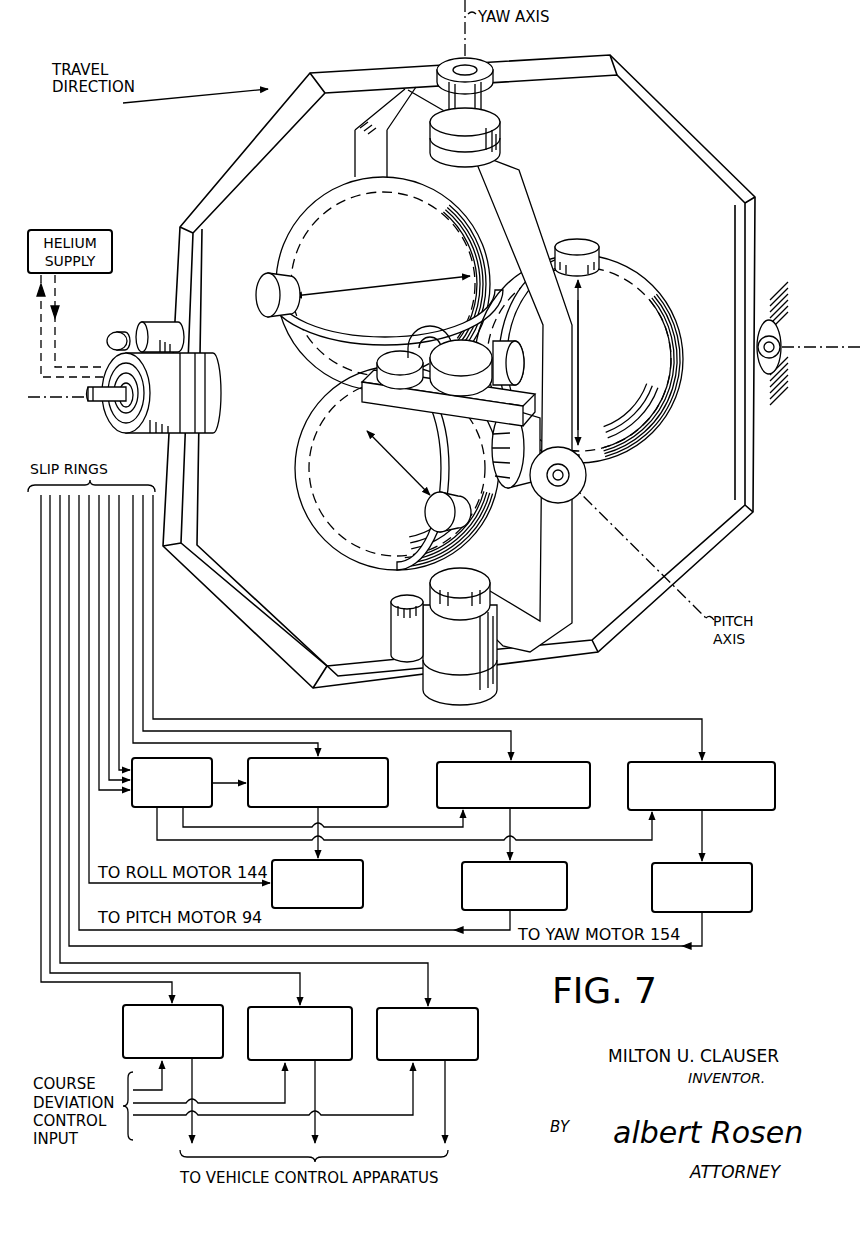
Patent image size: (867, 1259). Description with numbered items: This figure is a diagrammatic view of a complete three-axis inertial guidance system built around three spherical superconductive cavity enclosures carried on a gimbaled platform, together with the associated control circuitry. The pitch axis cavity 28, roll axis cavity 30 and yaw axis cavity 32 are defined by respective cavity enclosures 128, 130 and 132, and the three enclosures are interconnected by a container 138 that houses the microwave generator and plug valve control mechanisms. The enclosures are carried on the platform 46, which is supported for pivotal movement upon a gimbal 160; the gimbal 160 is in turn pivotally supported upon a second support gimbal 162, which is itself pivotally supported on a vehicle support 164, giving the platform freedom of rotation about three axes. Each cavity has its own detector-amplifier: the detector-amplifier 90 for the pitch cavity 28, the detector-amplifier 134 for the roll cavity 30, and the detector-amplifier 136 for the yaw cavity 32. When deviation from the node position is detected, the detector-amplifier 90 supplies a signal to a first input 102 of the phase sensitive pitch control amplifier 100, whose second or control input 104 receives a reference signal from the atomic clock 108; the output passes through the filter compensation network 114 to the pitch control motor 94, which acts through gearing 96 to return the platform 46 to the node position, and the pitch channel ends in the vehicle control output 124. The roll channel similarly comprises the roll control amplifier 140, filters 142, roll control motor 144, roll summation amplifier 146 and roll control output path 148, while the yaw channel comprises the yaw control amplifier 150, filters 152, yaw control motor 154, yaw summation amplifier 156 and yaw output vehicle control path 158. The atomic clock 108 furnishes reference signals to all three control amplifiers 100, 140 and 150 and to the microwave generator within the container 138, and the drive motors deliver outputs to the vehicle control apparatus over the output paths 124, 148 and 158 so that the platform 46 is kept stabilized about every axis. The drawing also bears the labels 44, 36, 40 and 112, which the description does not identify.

The second support gimbal 162 is at (682, 126).
The cavity enclosure 132 is at (442, 194).
The yaw axis cavity 32 is at (426, 206).
The spin axis of first rotor 44 is at (345, 282).
The detector-amplifier 136 is at (260, 297).
The roll control motor 144 is at (166, 318).
The detector-amplifier 90 is at (576, 238).
The pitch axis cavity 28 is at (632, 282).
The cavity enclosure 128 is at (659, 292).
The container 138 is at (448, 368).
The platform 46 is at (474, 420).
The spin axis of third rotor 36 is at (580, 303).
The pitch control motor 94 is at (580, 401).
The gearing 96 is at (535, 390).
The detector-amplifier 134 is at (470, 531).
The gimbal 160 is at (573, 528).
The cavity enclosure 130 is at (297, 464).
The roll axis cavity 30 is at (314, 447).
The spin axis of second rotor 40 is at (411, 491).
The yaw control motor 154 is at (389, 628).
The vehicle support 164 is at (770, 300).
The first input 102 is at (512, 736).
The pitch control amplifier 100 is at (575, 762).
The yaw control amplifier 150 is at (762, 746).
The roll control amplifier 140 is at (382, 758).
The atomic clock 108 is at (140, 808).
The control input 104 is at (461, 819).
The pitch amplifier output line 112 is at (515, 826).
The filters 142 is at (363, 876).
The filter compensation network 114 is at (567, 880).
The filters 152 is at (752, 880).
The roll summation amplifier 146 is at (123, 1022).
The yaw summation amplifier 156 is at (469, 1009).
The roll control output path 148 is at (196, 1140).
The vehicle control output 124 is at (319, 1140).
The yaw output vehicle control path 158 is at (449, 1140).